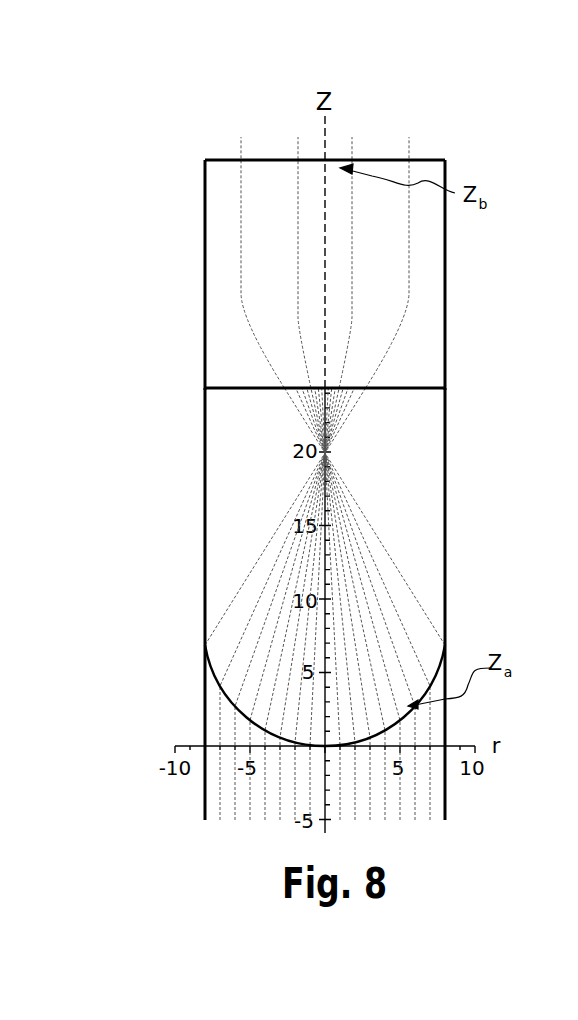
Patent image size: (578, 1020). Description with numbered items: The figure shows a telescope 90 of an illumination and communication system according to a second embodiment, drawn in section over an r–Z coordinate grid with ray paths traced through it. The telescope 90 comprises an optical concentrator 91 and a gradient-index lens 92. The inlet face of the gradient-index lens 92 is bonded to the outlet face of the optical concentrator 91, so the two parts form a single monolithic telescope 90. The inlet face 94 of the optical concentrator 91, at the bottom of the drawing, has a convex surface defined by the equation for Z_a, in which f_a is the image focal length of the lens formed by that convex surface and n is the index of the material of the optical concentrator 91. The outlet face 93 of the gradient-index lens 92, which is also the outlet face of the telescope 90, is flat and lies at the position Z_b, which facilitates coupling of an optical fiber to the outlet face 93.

The telescope 90 is at (153, 478).
The optical concentrator 91 is at (430, 475).
The gradient-index lens 92 is at (430, 355).
The outlet face 93 is at (275, 158).
The inlet face 94 is at (230, 690).